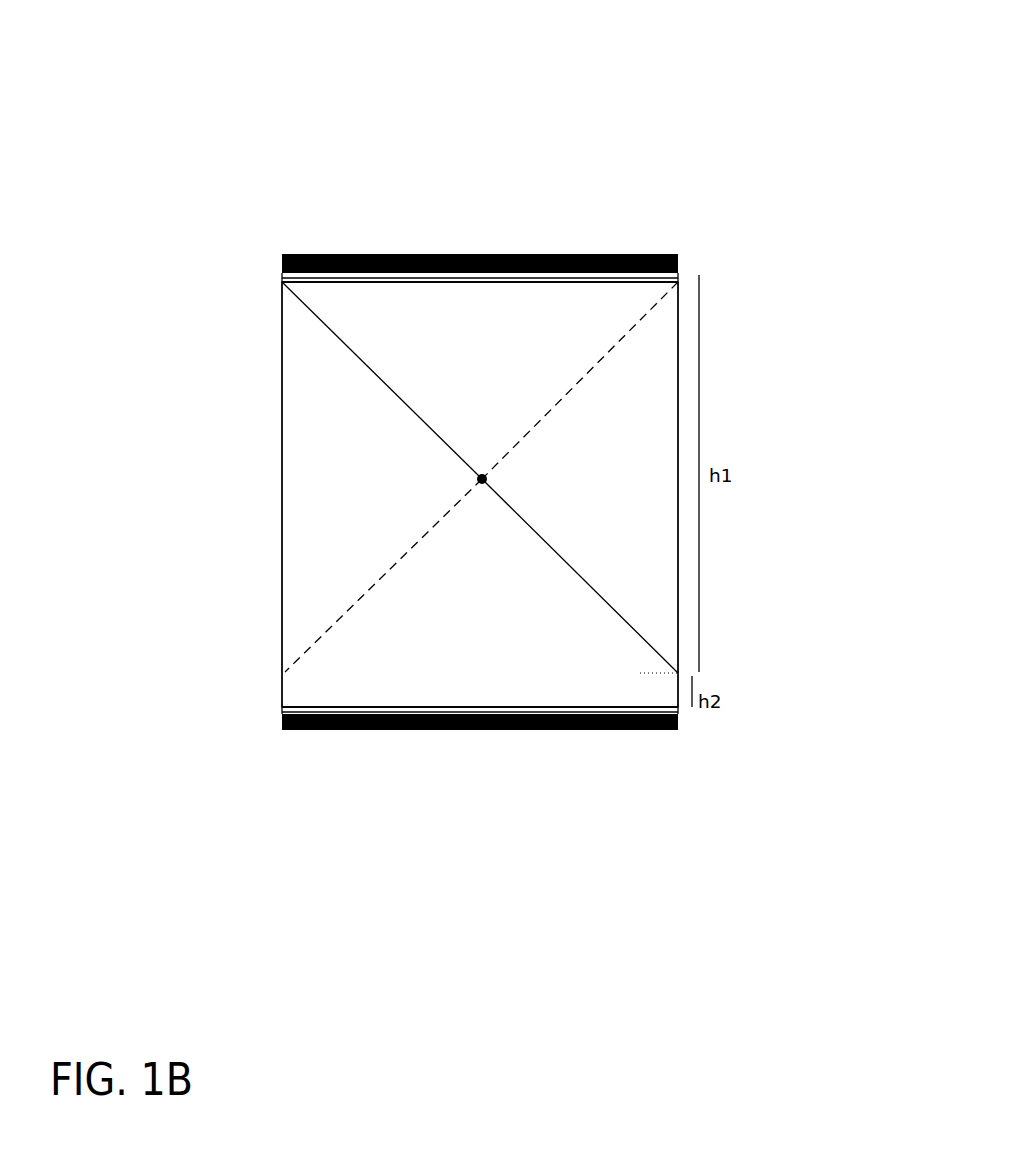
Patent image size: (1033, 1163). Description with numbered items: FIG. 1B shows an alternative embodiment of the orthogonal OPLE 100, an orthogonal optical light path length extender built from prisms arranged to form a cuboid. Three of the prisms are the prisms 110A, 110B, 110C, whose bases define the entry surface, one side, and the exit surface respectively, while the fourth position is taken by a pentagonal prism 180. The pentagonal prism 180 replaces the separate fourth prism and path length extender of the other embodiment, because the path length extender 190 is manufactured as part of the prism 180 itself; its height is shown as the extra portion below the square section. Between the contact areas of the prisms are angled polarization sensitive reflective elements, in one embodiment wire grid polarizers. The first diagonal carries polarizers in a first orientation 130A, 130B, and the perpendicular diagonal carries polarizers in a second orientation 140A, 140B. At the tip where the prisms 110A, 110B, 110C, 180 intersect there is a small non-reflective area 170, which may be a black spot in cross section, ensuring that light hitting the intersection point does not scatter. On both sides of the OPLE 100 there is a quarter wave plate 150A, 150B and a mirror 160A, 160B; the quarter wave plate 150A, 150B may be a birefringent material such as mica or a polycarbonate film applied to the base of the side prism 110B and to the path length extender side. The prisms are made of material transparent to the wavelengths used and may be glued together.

The orthogonal OPLE 100 is at (262, 173).
The mirror 160A is at (280, 256).
The quarter wave plate 150A is at (280, 278).
The polarization sensitive reflective element in a first orientation 130A is at (366, 352).
The polarization sensitive reflective element in a second orientation 140A is at (596, 352).
The non-reflective area 170 is at (498, 467).
The prism 110A is at (351, 494).
The prism 110B is at (480, 329).
The prism 110C is at (610, 494).
The pentagonal prism 180 is at (480, 651).
The quarter wave plate 150B is at (280, 710).
The mirror 160B is at (280, 735).
The polarization sensitive reflective element in a second orientation 140B is at (382, 595).
The polarization sensitive reflective element in a first orientation 130B is at (595, 612).
The path length extender 190 is at (702, 683).